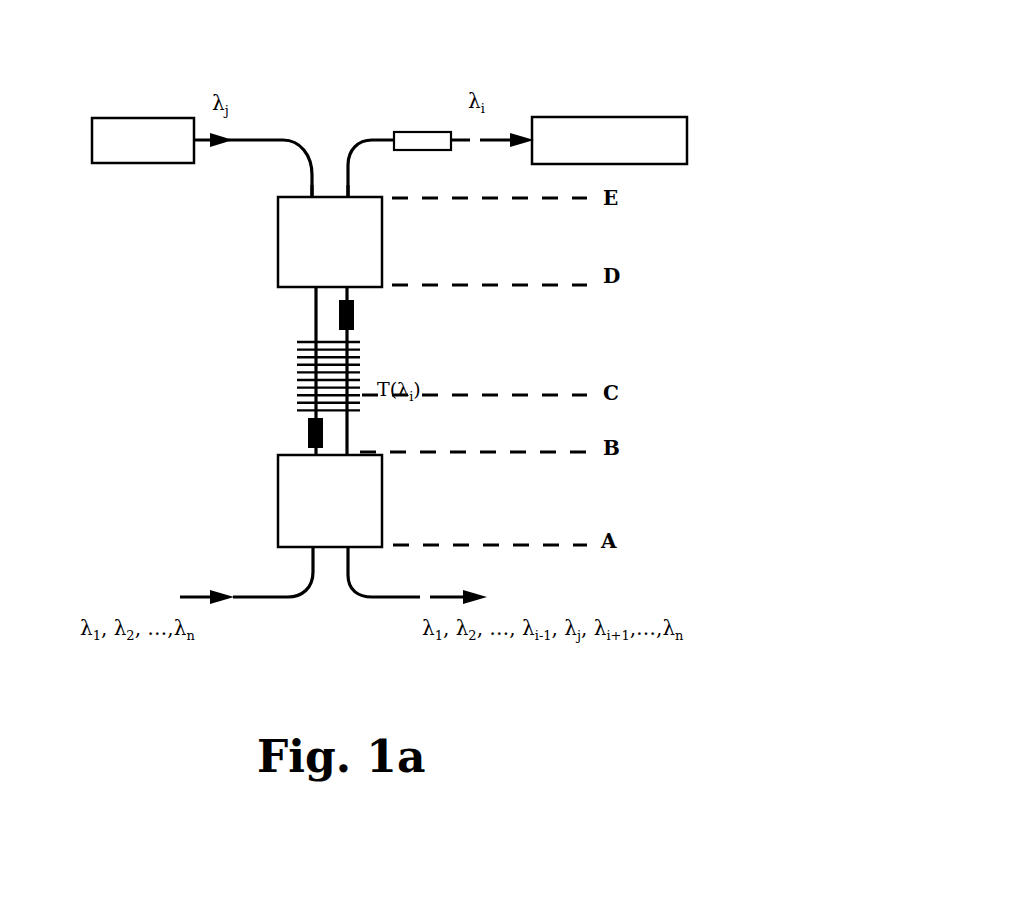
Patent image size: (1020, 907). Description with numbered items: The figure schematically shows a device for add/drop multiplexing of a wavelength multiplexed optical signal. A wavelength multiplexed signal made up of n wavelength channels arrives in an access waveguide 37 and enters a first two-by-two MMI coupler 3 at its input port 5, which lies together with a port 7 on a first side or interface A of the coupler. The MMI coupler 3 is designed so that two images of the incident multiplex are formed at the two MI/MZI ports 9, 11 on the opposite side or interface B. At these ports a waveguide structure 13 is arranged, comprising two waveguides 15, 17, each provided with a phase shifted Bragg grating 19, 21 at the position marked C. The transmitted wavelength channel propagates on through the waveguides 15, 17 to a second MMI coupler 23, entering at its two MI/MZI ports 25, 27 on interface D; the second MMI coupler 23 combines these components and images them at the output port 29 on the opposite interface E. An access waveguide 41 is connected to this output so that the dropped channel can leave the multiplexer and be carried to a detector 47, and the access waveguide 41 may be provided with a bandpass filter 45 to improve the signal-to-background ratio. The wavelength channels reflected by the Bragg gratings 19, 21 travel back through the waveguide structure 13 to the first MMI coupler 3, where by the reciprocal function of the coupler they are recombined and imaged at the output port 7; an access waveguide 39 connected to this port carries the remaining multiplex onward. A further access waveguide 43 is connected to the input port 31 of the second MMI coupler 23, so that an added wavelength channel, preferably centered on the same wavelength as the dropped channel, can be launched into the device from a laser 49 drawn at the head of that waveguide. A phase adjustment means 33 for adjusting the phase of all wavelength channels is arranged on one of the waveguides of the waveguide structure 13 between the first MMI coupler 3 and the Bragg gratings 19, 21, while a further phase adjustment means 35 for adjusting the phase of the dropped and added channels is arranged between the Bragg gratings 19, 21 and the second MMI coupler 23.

The first MMI coupler 3 is at (383, 495).
The input port 5 is at (312, 550).
The output port 7 is at (350, 548).
The MI/MZI port 9 is at (350, 452).
The MI/MZI port 11 is at (330, 452).
The waveguide structure 13 is at (392, 367).
The waveguide 15 is at (313, 323).
The waveguide 17 is at (356, 330).
The phase shifted Bragg grating 19 is at (298, 357).
The phase shifted Bragg grating 21 is at (360, 353).
The second MMI coupler 23 is at (383, 235).
The MI/MZI port 25 is at (313, 292).
The MI/MZI port 27 is at (350, 292).
The output port 29 is at (348, 197).
The input port 31 is at (310, 197).
The phase adjustment means 33 is at (307, 432).
The further phase adjustment means 35 is at (310, 303).
The access waveguide 37 is at (260, 597).
The access waveguide 39 is at (372, 597).
The access waveguide 41 is at (356, 140).
The access waveguide 43 is at (302, 142).
The bandpass filter 45 is at (428, 132).
The detector 47 is at (580, 117).
The laser 49 is at (150, 118).